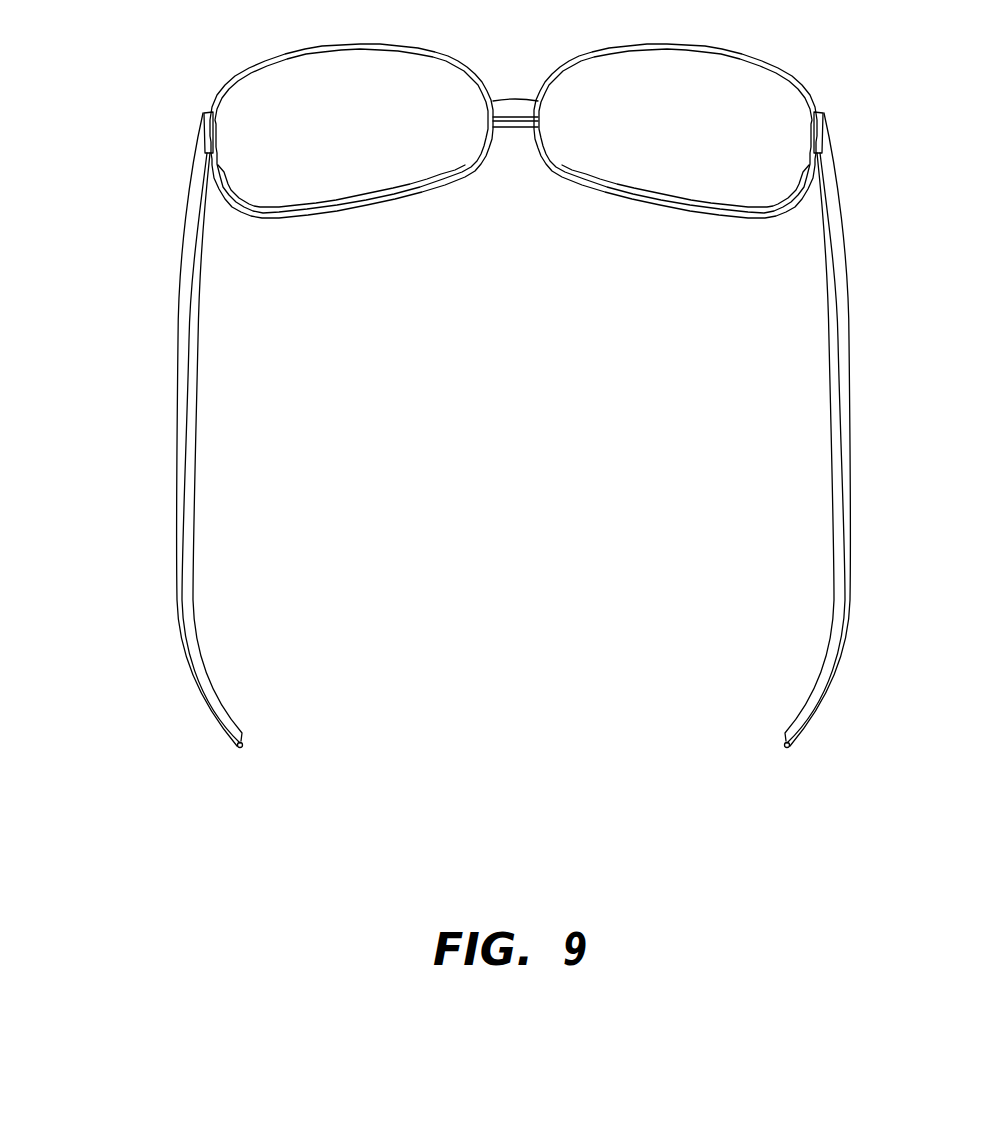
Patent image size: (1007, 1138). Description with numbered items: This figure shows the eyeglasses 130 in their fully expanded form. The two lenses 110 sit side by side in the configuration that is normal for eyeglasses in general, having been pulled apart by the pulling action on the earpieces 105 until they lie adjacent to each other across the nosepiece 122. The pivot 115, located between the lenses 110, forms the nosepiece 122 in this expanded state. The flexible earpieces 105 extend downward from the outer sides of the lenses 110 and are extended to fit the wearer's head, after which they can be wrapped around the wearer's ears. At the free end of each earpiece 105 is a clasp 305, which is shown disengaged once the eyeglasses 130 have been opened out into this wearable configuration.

The eyeglasses 130 is at (173, 36).
The lenses 110 is at (274, 192).
The pivot 115 is at (514, 100).
The nosepiece 122 is at (505, 118).
The earpieces 105 is at (192, 411).
The clasp 305 is at (245, 745).